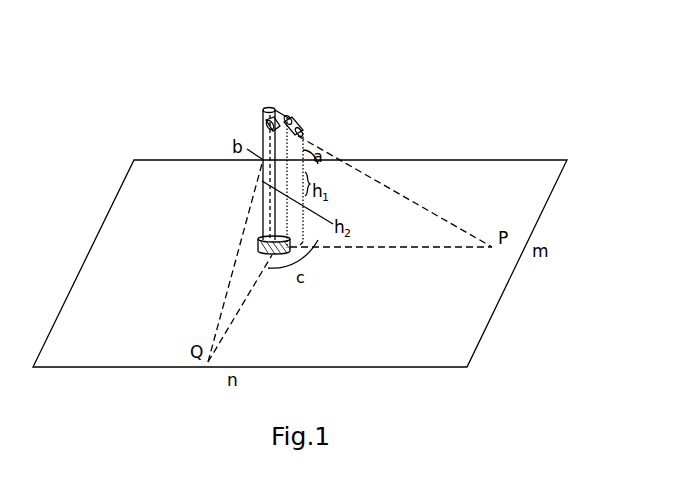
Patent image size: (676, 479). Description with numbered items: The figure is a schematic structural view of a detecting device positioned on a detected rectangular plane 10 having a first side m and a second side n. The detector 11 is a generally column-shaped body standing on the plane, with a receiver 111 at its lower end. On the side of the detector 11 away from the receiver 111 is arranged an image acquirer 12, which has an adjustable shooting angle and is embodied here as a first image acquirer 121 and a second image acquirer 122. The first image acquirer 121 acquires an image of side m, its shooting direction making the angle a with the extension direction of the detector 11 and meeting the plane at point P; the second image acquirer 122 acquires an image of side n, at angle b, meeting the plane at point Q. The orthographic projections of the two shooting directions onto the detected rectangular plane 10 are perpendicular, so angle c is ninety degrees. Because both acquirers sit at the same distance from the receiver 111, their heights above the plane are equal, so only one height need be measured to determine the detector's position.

The detected rectangular plane 10 is at (443, 355).
The detector 11 is at (262, 182).
The receiver 111 is at (258, 244).
The image acquirer 12 is at (342, 88).
The first image acquirer 121 is at (300, 124).
The second image acquirer 122 is at (270, 118).